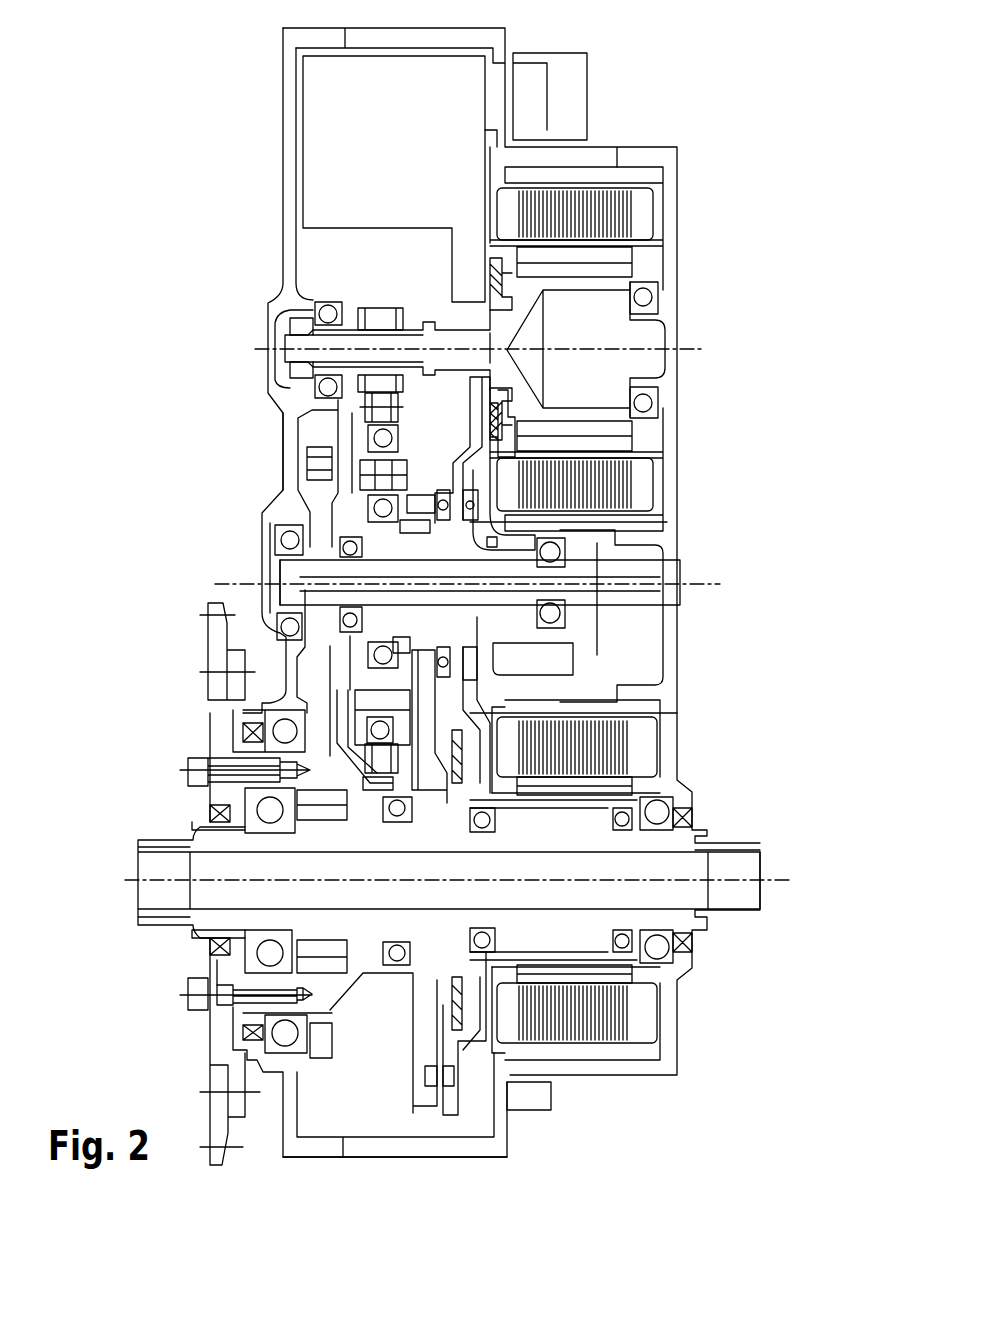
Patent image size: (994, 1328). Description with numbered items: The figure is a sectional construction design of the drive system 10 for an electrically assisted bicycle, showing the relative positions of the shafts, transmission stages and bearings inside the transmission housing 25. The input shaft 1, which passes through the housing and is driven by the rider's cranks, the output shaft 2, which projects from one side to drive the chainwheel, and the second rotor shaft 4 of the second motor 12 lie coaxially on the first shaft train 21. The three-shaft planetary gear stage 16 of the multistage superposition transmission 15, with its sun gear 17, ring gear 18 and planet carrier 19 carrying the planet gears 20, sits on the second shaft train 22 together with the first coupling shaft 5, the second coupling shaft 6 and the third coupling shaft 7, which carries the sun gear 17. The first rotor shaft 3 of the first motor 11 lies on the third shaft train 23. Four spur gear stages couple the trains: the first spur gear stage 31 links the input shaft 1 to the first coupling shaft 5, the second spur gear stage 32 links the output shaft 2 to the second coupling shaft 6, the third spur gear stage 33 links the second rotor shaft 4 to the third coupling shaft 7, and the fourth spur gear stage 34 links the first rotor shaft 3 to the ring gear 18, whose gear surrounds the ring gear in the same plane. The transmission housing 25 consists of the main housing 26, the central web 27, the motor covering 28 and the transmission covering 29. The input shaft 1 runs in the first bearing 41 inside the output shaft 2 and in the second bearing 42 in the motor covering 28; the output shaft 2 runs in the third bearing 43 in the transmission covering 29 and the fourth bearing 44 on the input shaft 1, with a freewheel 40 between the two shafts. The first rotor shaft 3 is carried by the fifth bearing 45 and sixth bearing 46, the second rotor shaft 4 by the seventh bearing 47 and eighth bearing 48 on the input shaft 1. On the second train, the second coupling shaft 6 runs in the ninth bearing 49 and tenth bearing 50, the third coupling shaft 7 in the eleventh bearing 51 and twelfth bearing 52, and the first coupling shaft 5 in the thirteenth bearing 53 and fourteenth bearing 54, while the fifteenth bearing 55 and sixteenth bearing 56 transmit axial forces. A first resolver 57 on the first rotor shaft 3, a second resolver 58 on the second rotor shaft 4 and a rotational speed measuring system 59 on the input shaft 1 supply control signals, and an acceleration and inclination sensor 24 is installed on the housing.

The input shaft 1 is at (132, 855).
The output shaft 2 is at (251, 884).
The first rotor shaft 3 is at (563, 326).
The second rotor shaft 4 is at (567, 803).
The first coupling shaft 5 is at (418, 520).
The second coupling shaft 6 is at (330, 629).
The third coupling shaft 7 is at (461, 558).
The drive system 10 is at (183, 181).
The first motor 11 is at (568, 339).
The second motor 12 is at (576, 880).
The multistage superposition transmission 15 is at (210, 456).
The planetary gear stage 16 is at (356, 483).
The sun gear 17 is at (388, 541).
The ring gear 18 is at (388, 414).
The planet carrier 19 is at (400, 460).
The planet gears 20 is at (383, 476).
The first shaft train 21 is at (822, 880).
The second shaft train 22 is at (740, 584).
The third shaft train 23 is at (742, 349).
The acceleration and inclination sensor 24 is at (539, 1106).
The transmission housing 25 is at (403, 1172).
The main housing 26 is at (415, 1143).
The central web 27 is at (520, 682).
The motor covering 28 is at (680, 695).
The transmission covering 29 is at (501, 439).
The first spur gear stage 31 is at (410, 1057).
The second spur gear stage 32 is at (330, 1020).
The third spur gear stage 33 is at (467, 463).
The fourth spur gear stage 34 is at (402, 307).
The freewheel 40 is at (322, 940).
The first bearing 41 is at (271, 930).
The second bearing 42 is at (655, 932).
The third bearing 43 is at (287, 1035).
The fourth bearing 44 is at (396, 940).
The fifth bearing 45 is at (330, 302).
The sixth bearing 46 is at (636, 385).
The seventh bearing 47 is at (482, 930).
The eighth bearing 48 is at (622, 930).
The ninth bearing 49 is at (293, 613).
The tenth bearing 50 is at (563, 568).
The eleventh bearing 51 is at (380, 557).
The twelfth bearing 52 is at (506, 544).
The thirteenth bearing 53 is at (417, 645).
The fourteenth bearing 54 is at (352, 628).
The fifteenth bearing 55 is at (518, 661).
The sixteenth bearing 56 is at (448, 656).
The first resolver 57 is at (476, 288).
The second resolver 58 is at (468, 1004).
The rotational speed measuring system 59 is at (444, 1092).